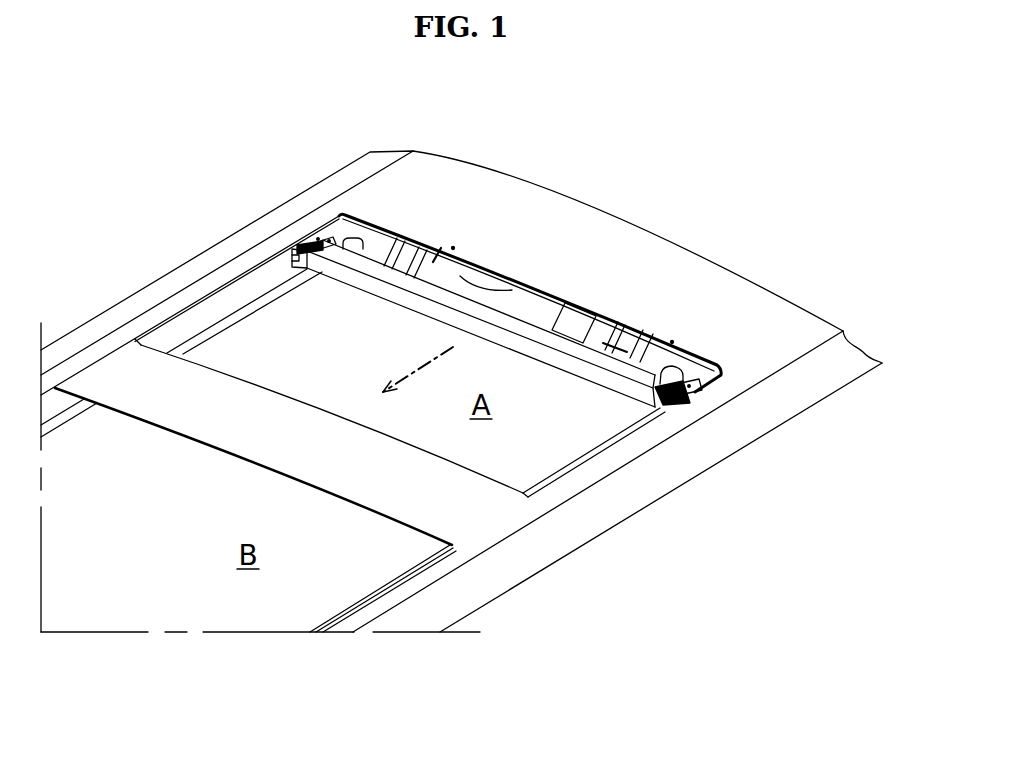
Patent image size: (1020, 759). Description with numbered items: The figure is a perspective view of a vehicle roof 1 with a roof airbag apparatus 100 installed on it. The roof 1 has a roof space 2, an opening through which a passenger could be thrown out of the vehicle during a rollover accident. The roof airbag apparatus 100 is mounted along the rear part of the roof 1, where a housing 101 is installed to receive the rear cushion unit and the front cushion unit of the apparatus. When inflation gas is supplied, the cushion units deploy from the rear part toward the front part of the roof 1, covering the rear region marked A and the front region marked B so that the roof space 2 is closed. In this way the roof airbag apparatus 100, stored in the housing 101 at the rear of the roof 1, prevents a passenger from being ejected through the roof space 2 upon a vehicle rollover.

The roof 1 is at (757, 308).
The roof space 2 is at (282, 333).
The roof airbag apparatus 100 is at (506, 244).
The housing 101 is at (597, 358).